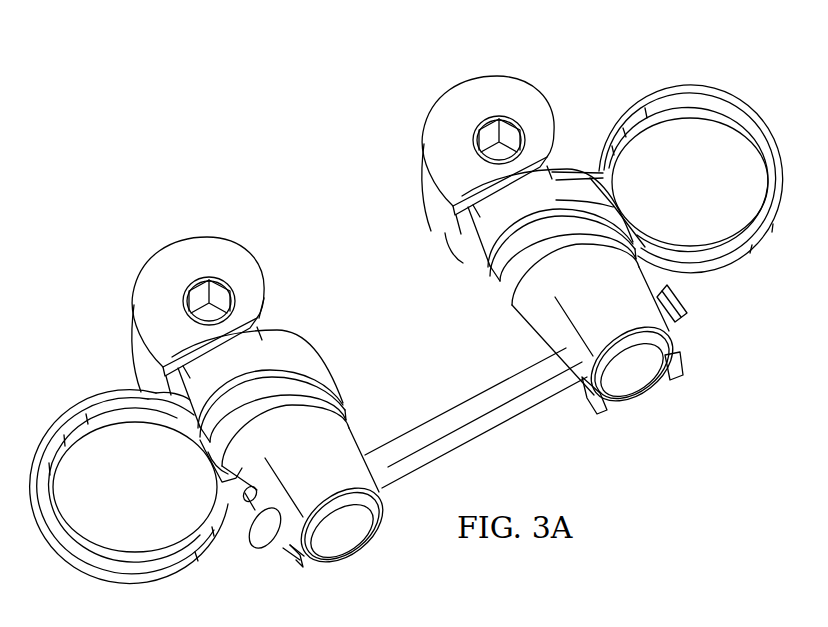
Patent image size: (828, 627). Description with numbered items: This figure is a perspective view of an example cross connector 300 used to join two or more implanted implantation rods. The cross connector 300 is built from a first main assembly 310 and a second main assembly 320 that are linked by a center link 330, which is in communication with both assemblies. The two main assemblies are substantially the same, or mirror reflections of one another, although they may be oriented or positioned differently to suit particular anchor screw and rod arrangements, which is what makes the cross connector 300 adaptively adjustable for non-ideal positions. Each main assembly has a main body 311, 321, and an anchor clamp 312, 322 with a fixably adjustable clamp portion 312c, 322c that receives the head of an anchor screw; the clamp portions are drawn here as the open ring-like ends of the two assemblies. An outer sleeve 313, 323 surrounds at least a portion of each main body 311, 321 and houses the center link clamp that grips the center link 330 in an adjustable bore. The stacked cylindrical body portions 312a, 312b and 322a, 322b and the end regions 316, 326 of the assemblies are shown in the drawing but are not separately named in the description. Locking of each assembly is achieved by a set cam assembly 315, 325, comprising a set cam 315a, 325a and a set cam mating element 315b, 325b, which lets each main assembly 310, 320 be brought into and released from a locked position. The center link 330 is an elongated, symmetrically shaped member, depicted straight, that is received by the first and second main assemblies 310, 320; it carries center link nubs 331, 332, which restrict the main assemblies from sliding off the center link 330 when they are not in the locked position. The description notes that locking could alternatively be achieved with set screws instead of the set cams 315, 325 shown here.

The cross connector 300 is at (285, 121).
The first main assembly 310 is at (174, 215).
The main body 311 is at (264, 326).
The anchor clamp 312 is at (153, 585).
The first band of first clamp 312a is at (312, 347).
The second band of first clamp 312b is at (337, 390).
The fixably adjustable clamp portion 312c is at (83, 567).
The outer sleeve 313 is at (353, 423).
The set cam assembly 315 is at (123, 302).
The set cam 315a is at (147, 272).
The set cam mating element 315b is at (142, 362).
The end face of first clamp 316 is at (347, 541).
The second main assembly 320 is at (467, 61).
The main body 321 is at (448, 255).
The anchor clamp 322 is at (571, 157).
The first band of second clamp 322a is at (475, 281).
The second band of second clamp 322b is at (497, 313).
The fixably adjustable clamp portion 322c is at (733, 262).
The outer sleeve 323 is at (543, 333).
The set cam assembly 325 is at (546, 86).
The set cam 325a is at (440, 120).
The set cam mating element 325b is at (430, 207).
The end face of second clamp 326 is at (637, 381).
The center link 330 is at (487, 433).
The center link nub 331 is at (273, 550).
The center link nub 332 is at (677, 308).